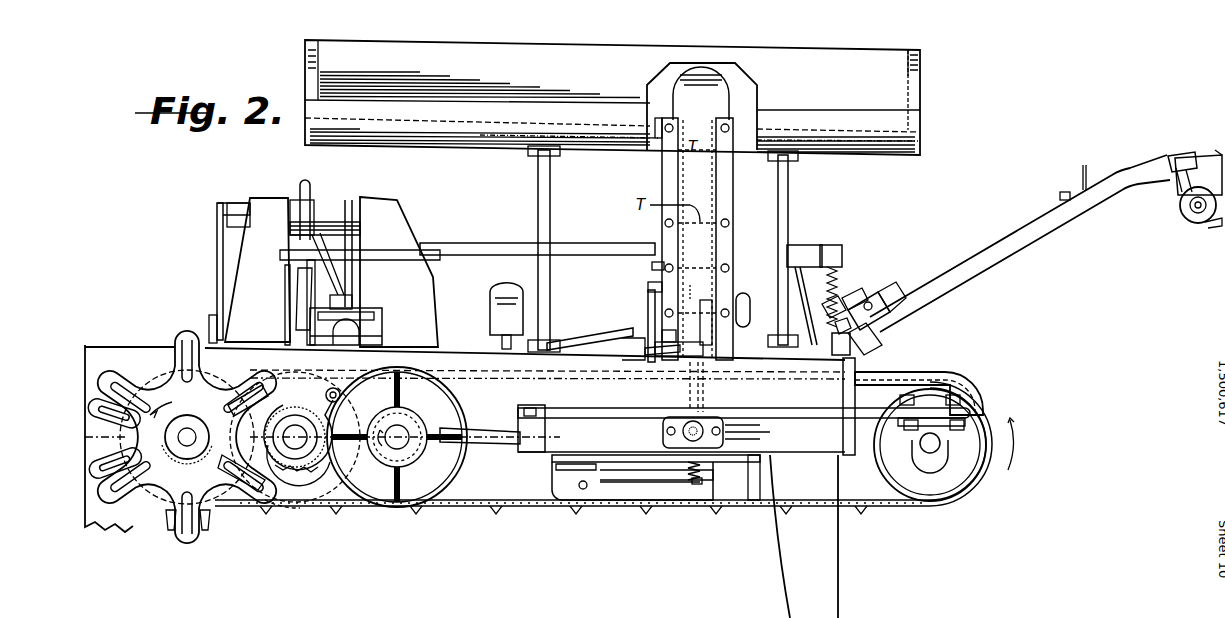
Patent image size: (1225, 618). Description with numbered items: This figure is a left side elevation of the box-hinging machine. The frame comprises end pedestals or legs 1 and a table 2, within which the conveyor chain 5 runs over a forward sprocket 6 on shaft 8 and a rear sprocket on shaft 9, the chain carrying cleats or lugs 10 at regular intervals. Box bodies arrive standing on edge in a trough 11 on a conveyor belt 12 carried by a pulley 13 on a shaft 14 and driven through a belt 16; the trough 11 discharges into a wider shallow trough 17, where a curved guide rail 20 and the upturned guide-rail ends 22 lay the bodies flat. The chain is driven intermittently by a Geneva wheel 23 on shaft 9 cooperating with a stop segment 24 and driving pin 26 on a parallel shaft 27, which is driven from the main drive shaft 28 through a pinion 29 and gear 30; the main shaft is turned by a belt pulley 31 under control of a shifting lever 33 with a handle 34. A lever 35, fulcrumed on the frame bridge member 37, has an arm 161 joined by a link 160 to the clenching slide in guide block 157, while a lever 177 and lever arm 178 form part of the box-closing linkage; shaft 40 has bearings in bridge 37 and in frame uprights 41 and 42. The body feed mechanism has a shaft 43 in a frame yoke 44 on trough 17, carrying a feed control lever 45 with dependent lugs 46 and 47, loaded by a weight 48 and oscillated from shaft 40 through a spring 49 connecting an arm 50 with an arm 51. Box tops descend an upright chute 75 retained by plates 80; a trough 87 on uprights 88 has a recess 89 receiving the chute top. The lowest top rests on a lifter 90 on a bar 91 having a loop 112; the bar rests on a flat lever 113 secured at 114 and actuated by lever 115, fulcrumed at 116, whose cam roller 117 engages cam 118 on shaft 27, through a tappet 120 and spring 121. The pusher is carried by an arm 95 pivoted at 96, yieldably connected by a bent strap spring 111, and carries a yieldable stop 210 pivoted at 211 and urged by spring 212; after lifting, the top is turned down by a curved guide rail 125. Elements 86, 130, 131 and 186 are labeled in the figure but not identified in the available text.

The end pedestals or legs 1 is at (840, 570).
The table 2 is at (744, 397).
The conveyor chain 5 is at (880, 512).
The forward sprocket 6 is at (944, 445).
The shaft 8 is at (930, 453).
The shaft 9 is at (190, 432).
The cleats or lugs 10 is at (948, 374).
The trough 11 is at (1200, 160).
The conveyor belt 12 is at (1210, 224).
The pulley 13 is at (1190, 215).
The shaft 14 is at (1190, 207).
The belt 16 is at (1215, 148).
The wider shallow trough 17 is at (1030, 238).
The curved guide rail 20 is at (1174, 155).
The upwardly curved ends of guide rails 22 is at (1085, 165).
The Geneva wheel 23 is at (208, 512).
The stop segment 24 is at (268, 500).
The driving pin 26 is at (345, 395).
The parallel shaft 27 is at (298, 425).
The main drive shaft 28 is at (397, 470).
The pinion 29 is at (452, 400).
The gear 30 is at (302, 506).
The belt pulley 31 is at (470, 420).
The shifting lever 33 is at (530, 406).
The handle 34 is at (310, 285).
The lever 35 is at (306, 186).
The frame bridge member 37 is at (278, 200).
The shaft 40 is at (608, 250).
The frame upright 41 is at (803, 260).
The frame upright 42 is at (660, 265).
The shaft 43 is at (862, 308).
The frame yoke 44 is at (880, 332).
The feed control lever 45 is at (836, 330).
The lug 46 is at (888, 300).
The lug 47 is at (840, 345).
The weight 48 is at (828, 306).
The spring 49 is at (840, 270).
The arm 50 is at (835, 248).
The arm 51 is at (848, 300).
The upright chute 75 is at (662, 172).
The plates 80 is at (697, 239).
The lever 86 is at (650, 340).
The trough 87 is at (850, 72).
The uprights 88 is at (538, 206).
The recess 89 is at (740, 80).
The lifter 90 is at (688, 366).
The bar 91 is at (703, 382).
The arm 95 is at (738, 313).
The pivot 96 is at (652, 285).
The bent strap spring 111 is at (695, 284).
The loop 112 is at (665, 428).
The flat lever 113 is at (752, 462).
The frame securing point 114 is at (592, 455).
The lever 115 is at (660, 508).
The fulcrum 116 is at (585, 490).
The cam roller 117 is at (283, 520).
The cam 118 is at (288, 398).
The tappet 120 is at (706, 482).
The spring 121 is at (705, 465).
The guide rail 125 is at (612, 340).
The stem 130 is at (505, 340).
The cylinder 131 is at (506, 286).
The guide block 157 is at (375, 326).
The link 160 is at (360, 300).
The arm 161 is at (370, 240).
The lever 177 is at (212, 330).
The lever arm 178 is at (216, 258).
The lever 186 is at (300, 304).
The yieldable stop 210 is at (679, 331).
The pivot 211 is at (655, 358).
The spring 212 is at (648, 352).